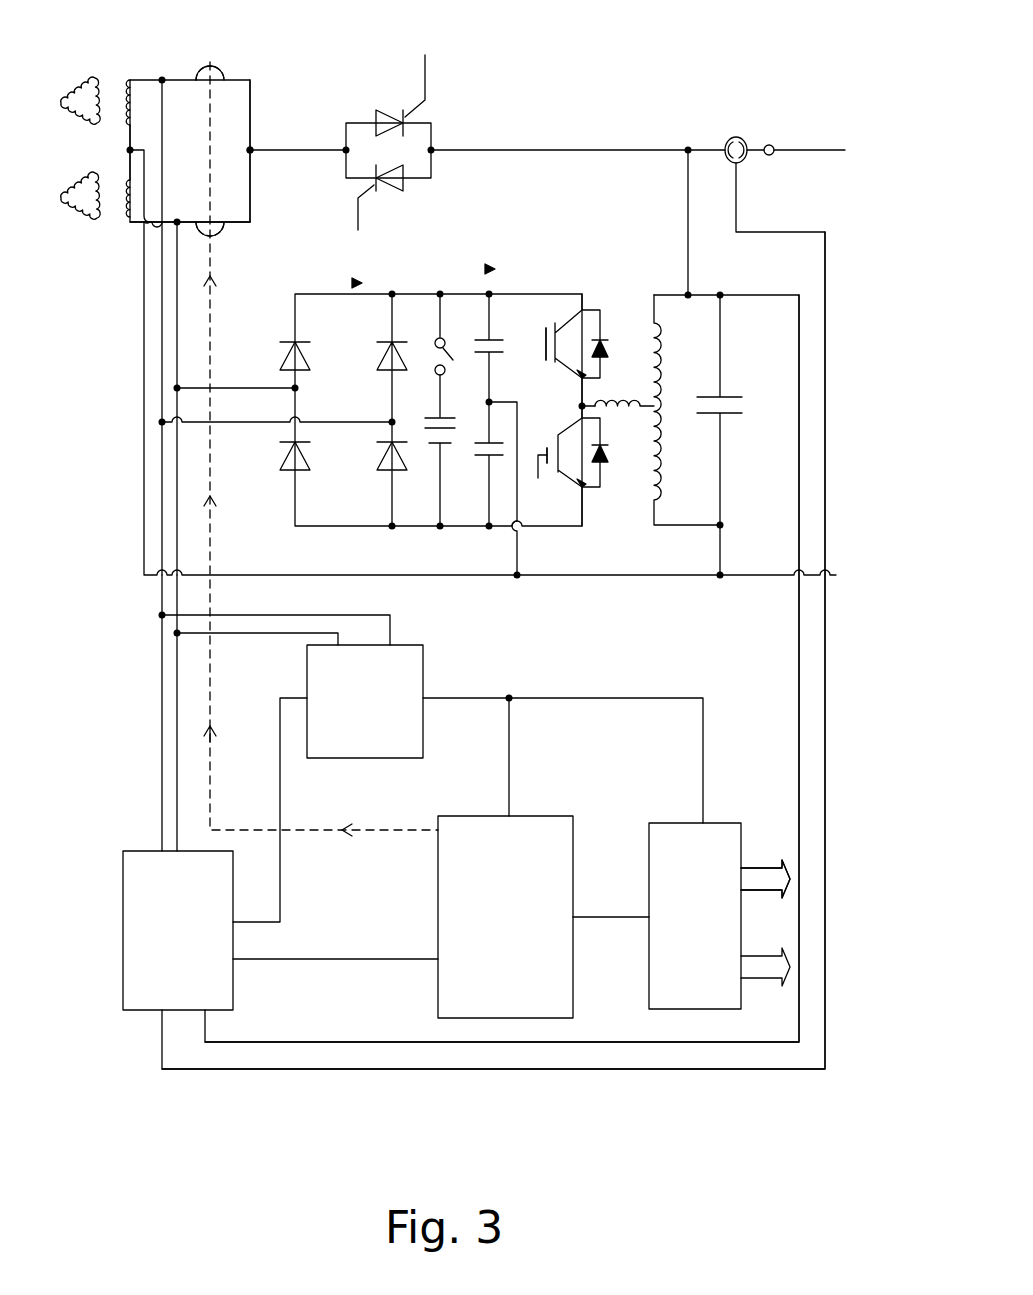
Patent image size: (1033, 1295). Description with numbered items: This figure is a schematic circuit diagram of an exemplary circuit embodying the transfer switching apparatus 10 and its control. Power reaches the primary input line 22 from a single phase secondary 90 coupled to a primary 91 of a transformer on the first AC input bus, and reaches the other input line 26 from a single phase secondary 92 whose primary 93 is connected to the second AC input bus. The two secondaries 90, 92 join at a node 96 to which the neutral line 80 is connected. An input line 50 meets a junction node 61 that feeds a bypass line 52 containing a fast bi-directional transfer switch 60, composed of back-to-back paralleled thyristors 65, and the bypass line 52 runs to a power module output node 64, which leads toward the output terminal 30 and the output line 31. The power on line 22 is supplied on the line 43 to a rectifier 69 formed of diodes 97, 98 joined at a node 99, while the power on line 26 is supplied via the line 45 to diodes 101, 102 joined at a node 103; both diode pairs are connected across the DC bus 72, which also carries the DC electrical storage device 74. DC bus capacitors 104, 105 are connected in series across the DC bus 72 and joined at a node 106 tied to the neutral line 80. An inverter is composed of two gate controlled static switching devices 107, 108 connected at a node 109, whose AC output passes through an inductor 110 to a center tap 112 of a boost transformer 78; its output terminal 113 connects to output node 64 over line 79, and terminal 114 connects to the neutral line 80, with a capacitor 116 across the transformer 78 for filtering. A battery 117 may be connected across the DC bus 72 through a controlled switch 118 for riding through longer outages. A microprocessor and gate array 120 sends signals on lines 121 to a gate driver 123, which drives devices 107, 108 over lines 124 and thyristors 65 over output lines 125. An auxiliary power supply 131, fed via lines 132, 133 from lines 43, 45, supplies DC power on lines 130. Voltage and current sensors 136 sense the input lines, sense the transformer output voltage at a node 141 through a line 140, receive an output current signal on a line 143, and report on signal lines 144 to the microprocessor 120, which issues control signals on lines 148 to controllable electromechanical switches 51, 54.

The transfer switching apparatus 10 is at (591, 81).
The primary input line 22 is at (165, 75).
The input line 26 is at (135, 224).
The output terminal 30 is at (773, 145).
The output line 31 is at (815, 152).
The line 43 is at (162, 358).
The line 45 is at (178, 255).
The input line 50 is at (252, 80).
The controllable electromechanical switch 51 is at (222, 68).
The bypass line 52 is at (310, 148).
The controllable electromechanical switch 54 is at (226, 214).
The bi-directional transfer switch 60 is at (433, 125).
The junction node 61 is at (253, 152).
The power module output node 64 is at (686, 148).
The thyristors 65 is at (375, 118).
The rectifier 69 is at (382, 244).
The DC bus 72 is at (520, 293).
The DC electrical storage device 74 is at (559, 189).
The transformer 78 is at (627, 559).
The line 79 is at (687, 214).
The neutral line 80 is at (150, 170).
The single phase secondary 90 is at (132, 80).
The primary 91 is at (82, 90).
The single phase secondary 92 is at (128, 222).
The primary 93 is at (70, 207).
The node 96 is at (127, 149).
The diode 97 is at (380, 358).
The diode 98 is at (385, 472).
The node 99 is at (390, 422).
The diode 101 is at (300, 340).
The diode 102 is at (285, 470).
The node 103 is at (299, 388).
The DC bus capacitor 104 is at (492, 338).
The DC bus capacitor 105 is at (482, 460).
The node 106 is at (497, 398).
The gate controlled static switching device 107 is at (558, 335).
The gate controlled static switching device 108 is at (587, 490).
The node 109 is at (581, 406).
The inductor 110 is at (616, 402).
The center tap 112 is at (661, 361).
The output terminal 113 is at (692, 292).
The output terminal 114 is at (722, 527).
The capacitor 116 is at (728, 396).
The battery 117 is at (438, 412).
The controlled switch 118 is at (445, 338).
The microprocessor and gate array 120 is at (550, 813).
The lines 121 is at (605, 915).
The gate driver 123 is at (668, 822).
The lines 124 is at (545, 346).
The output lines 125 is at (427, 73).
The lines 130 is at (562, 697).
The auxiliary power supply 131 is at (425, 662).
The line 132 is at (161, 490).
The line 133 is at (176, 527).
The voltage and current sensors 136 is at (140, 850).
The line 140 is at (797, 631).
The node 141 is at (723, 295).
The line 143 is at (823, 665).
The signal lines 144 is at (741, 138).
The lines 148 is at (212, 305).